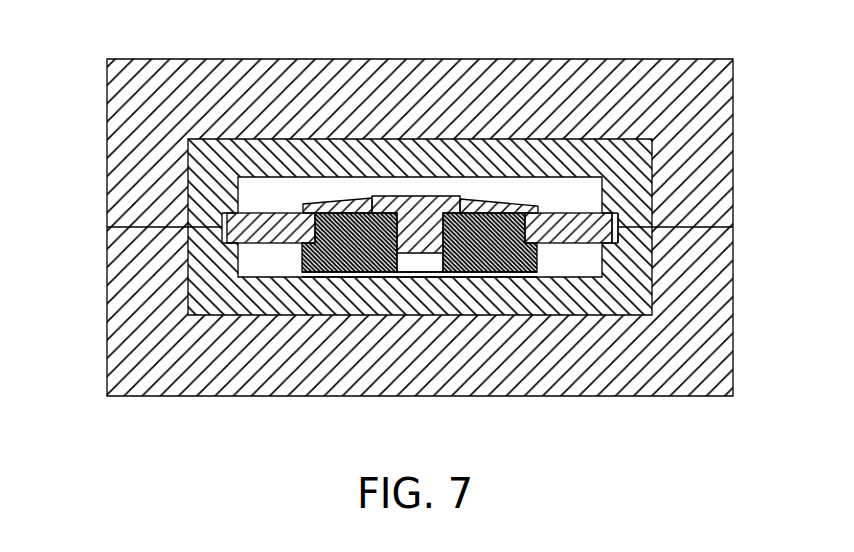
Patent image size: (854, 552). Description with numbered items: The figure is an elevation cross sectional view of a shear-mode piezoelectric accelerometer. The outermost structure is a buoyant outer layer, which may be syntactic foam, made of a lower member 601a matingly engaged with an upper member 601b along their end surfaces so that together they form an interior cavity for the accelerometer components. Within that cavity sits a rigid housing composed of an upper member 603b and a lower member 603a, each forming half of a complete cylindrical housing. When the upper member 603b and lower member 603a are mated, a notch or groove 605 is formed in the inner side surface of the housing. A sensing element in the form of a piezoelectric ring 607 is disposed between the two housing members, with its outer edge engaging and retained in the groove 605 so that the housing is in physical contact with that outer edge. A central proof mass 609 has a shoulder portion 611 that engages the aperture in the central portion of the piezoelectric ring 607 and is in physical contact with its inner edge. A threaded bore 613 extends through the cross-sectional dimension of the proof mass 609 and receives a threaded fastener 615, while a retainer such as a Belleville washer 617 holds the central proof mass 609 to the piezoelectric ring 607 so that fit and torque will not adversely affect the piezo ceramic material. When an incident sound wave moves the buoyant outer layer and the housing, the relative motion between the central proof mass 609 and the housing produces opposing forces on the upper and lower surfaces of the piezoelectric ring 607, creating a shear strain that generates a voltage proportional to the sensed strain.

The lower member 601a is at (688, 300).
The upper member 601b is at (688, 130).
The lower member 603a is at (203, 255).
The upper member 603b is at (203, 176).
The groove 605 is at (609, 244).
The piezoelectric ring 607 is at (253, 218).
The central proof mass 609 is at (318, 268).
The shoulder portion 611 is at (348, 207).
The threaded bore 613 is at (405, 275).
The threaded fastener 615 is at (418, 250).
The Belleville washer 617 is at (497, 207).